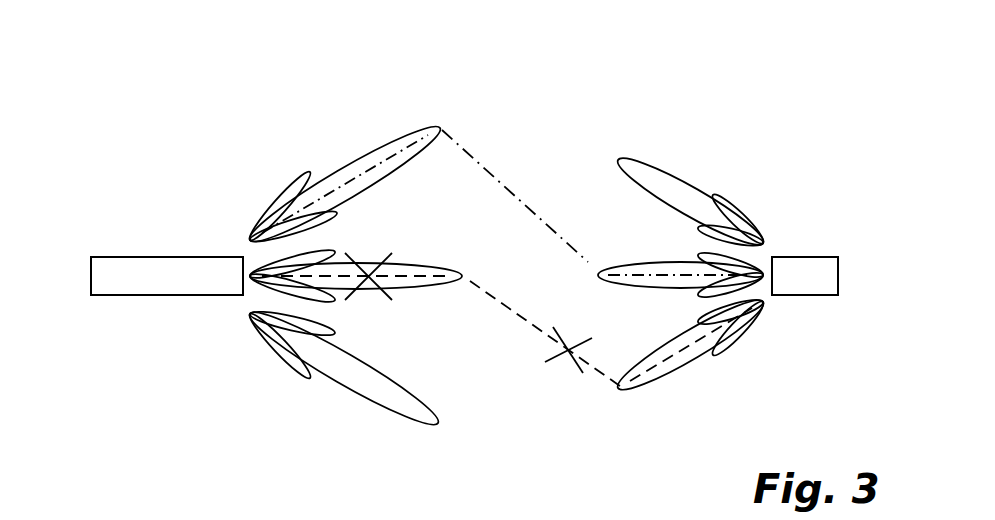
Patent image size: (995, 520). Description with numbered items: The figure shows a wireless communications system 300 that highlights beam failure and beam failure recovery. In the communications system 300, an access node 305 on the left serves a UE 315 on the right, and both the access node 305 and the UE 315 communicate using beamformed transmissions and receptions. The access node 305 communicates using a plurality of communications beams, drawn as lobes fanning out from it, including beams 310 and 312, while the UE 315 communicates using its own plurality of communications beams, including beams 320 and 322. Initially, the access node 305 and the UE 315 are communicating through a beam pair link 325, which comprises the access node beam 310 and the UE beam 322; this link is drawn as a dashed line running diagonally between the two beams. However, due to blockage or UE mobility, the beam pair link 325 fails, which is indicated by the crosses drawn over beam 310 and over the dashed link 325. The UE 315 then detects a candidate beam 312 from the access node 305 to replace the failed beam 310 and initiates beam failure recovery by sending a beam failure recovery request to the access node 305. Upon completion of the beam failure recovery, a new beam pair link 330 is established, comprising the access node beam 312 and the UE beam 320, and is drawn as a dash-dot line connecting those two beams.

The wireless communications system 300 is at (775, 62).
The access node 305 is at (120, 257).
The beam 310 is at (420, 265).
The candidate beam 312 is at (390, 140).
The UE 315 is at (815, 257).
The beam 320 is at (630, 263).
The beam 322 is at (650, 384).
The beam pair link (BPL) 325 is at (497, 303).
The beam pair link (BPL) 330 is at (483, 172).